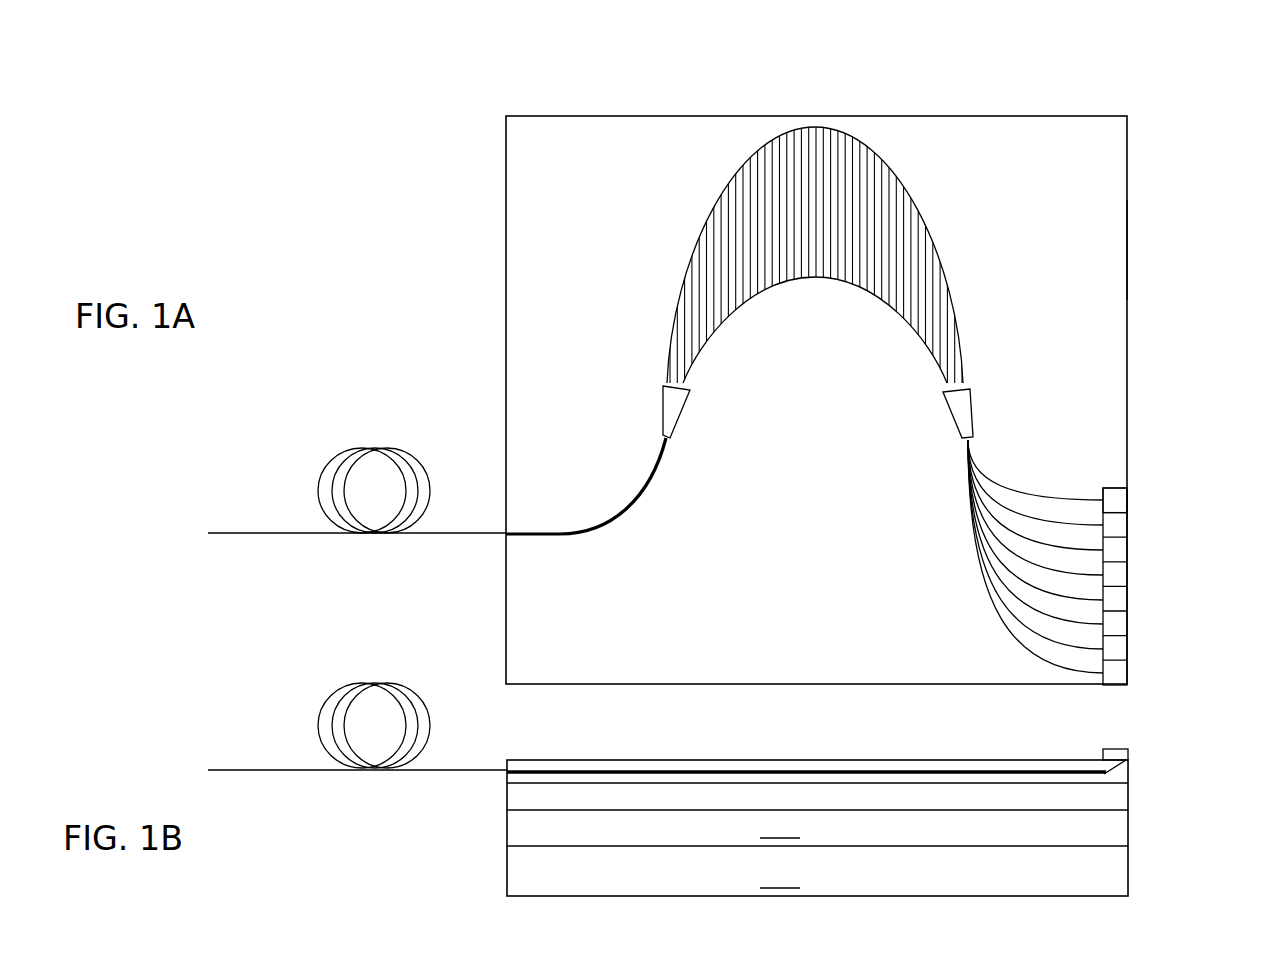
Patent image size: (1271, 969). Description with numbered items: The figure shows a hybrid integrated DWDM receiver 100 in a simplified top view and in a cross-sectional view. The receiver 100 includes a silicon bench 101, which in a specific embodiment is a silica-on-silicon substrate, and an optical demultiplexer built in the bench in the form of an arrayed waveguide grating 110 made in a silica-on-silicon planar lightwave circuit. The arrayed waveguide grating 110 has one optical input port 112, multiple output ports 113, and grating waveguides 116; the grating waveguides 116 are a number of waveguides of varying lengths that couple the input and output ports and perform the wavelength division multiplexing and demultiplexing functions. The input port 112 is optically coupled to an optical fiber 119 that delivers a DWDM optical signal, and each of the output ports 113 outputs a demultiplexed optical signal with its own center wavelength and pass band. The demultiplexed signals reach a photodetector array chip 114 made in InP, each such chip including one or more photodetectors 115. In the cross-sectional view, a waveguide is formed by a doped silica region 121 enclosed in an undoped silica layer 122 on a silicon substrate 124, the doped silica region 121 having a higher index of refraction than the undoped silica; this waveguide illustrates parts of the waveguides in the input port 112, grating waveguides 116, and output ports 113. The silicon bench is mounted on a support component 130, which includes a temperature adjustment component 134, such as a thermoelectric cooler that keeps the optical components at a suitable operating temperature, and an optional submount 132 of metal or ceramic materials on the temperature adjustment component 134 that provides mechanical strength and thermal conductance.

In FIG. 1A, the hybrid integrated DWDM receiver 100 is at (1128, 74).
In FIG. 1A, the silicon bench 101 is at (1128, 262).
In FIG. 1B, the silicon bench 101 is at (1138, 765).
In FIG. 1A, the arrayed waveguide grating 110 is at (877, 279).
In FIG. 1A, the optical input port 112 is at (557, 533).
In FIG. 1A, the output ports 113 is at (1003, 475).
In FIG. 1A, the photodetector array chip 114 is at (1159, 572).
In FIG. 1B, the photodetector array chip 114 is at (1115, 748).
In FIG. 1A, the photodetector 115 is at (1115, 498).
In FIG. 1A, the grating waveguides 116 is at (918, 208).
In FIG. 1A, the optical fiber 119 is at (357, 448).
In FIG. 1B, the optical fiber 119 is at (333, 695).
In FIG. 1B, the doped silica region 121 is at (692, 772).
In FIG. 1B, the undoped silica layer 122 is at (793, 758).
In FIG. 1B, the silicon substrate 124 is at (1090, 798).
In FIG. 1B, the support component 130 is at (765, 851).
In FIG. 1B, the submount 132 is at (780, 824).
In FIG. 1B, the temperature adjustment component 134 is at (780, 874).